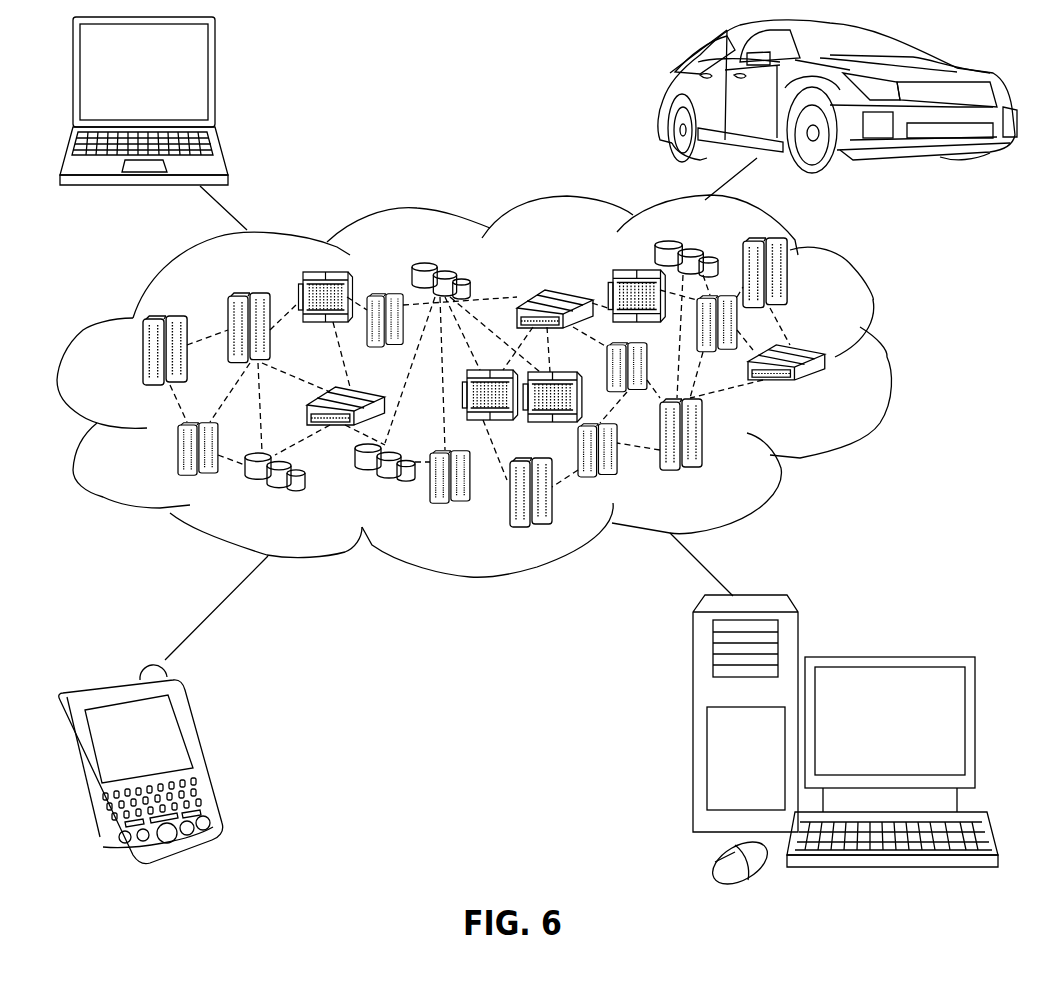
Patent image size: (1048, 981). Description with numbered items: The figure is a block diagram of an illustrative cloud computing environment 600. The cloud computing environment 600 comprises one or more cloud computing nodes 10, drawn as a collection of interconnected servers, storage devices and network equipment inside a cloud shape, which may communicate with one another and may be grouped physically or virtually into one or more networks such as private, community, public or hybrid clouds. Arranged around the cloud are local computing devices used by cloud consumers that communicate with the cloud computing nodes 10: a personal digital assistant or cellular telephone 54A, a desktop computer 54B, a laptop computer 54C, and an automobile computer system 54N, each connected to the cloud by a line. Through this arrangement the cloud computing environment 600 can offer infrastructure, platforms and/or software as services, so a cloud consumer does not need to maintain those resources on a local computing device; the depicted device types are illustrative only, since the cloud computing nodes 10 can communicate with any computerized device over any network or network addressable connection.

The cloud computing environment 600 is at (888, 362).
The cloud computing node 10 is at (840, 392).
The personal digital assistant or cellular telephone 54A is at (203, 752).
The desktop computer 54B is at (887, 655).
The laptop computer 54C is at (215, 80).
The automobile computer system 54N is at (663, 98).